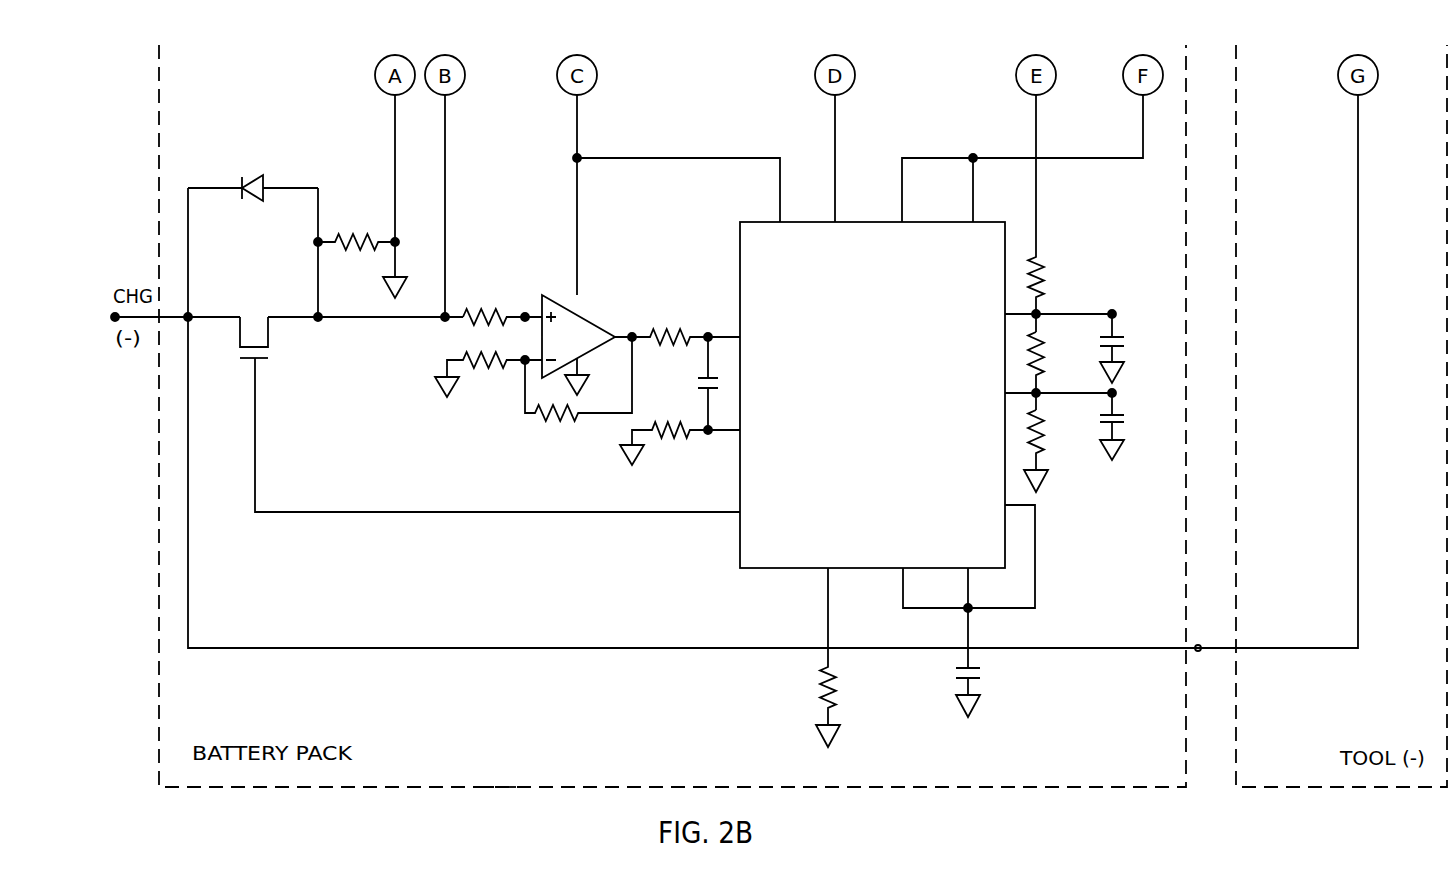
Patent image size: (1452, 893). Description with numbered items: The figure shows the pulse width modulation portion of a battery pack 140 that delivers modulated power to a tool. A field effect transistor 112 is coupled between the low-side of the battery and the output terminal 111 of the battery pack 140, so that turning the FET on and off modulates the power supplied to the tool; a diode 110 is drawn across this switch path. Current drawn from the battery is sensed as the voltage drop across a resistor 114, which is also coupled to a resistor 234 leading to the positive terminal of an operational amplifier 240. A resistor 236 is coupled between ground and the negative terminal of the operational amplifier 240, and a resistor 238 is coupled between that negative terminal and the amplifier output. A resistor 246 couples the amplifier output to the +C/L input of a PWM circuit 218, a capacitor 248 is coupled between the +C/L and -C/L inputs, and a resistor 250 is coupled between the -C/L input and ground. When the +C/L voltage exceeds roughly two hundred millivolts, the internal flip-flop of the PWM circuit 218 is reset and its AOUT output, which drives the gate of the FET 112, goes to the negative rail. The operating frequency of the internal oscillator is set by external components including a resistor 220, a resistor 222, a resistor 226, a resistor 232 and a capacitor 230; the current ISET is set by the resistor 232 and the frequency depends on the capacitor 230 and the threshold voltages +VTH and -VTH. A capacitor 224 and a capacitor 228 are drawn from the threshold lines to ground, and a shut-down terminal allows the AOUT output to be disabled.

The diode 110 is at (253, 177).
The resistor 114 is at (376, 235).
The field effect transistor 112 is at (240, 332).
The resistor 234 is at (503, 307).
The resistor 236 is at (474, 372).
The resistor 238 is at (546, 428).
The operational amplifier 240 is at (588, 322).
The resistor 246 is at (688, 332).
The capacitor 248 is at (700, 380).
The resistor 250 is at (690, 433).
The pulse width modulation circuit 218 is at (762, 222).
The resistor 220 is at (1048, 258).
The resistor 222 is at (1048, 355).
The capacitor 224 is at (1125, 336).
The resistor 226 is at (1045, 412).
The capacitor 228 is at (1122, 416).
The resistor 232 is at (840, 685).
The capacitor 230 is at (985, 670).
The output terminal 111 is at (1200, 651).
The battery pack 140 is at (500, 789).